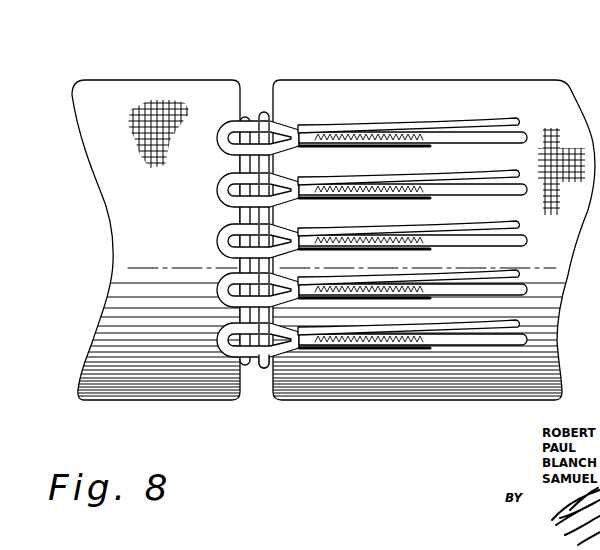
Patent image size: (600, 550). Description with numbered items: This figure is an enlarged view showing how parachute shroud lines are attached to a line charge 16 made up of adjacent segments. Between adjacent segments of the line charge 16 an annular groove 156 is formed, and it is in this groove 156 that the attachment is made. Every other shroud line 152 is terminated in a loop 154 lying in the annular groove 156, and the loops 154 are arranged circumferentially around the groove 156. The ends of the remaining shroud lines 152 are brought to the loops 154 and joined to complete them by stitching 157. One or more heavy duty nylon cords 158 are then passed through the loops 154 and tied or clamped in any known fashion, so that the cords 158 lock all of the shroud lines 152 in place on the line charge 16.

The line charge 16 is at (118, 79).
The shroud line 152 is at (297, 128).
The loop 154 is at (221, 124).
The annular groove 156 is at (267, 372).
The stitching 157 is at (400, 133).
The heavy duty nylon cord 158 is at (266, 111).